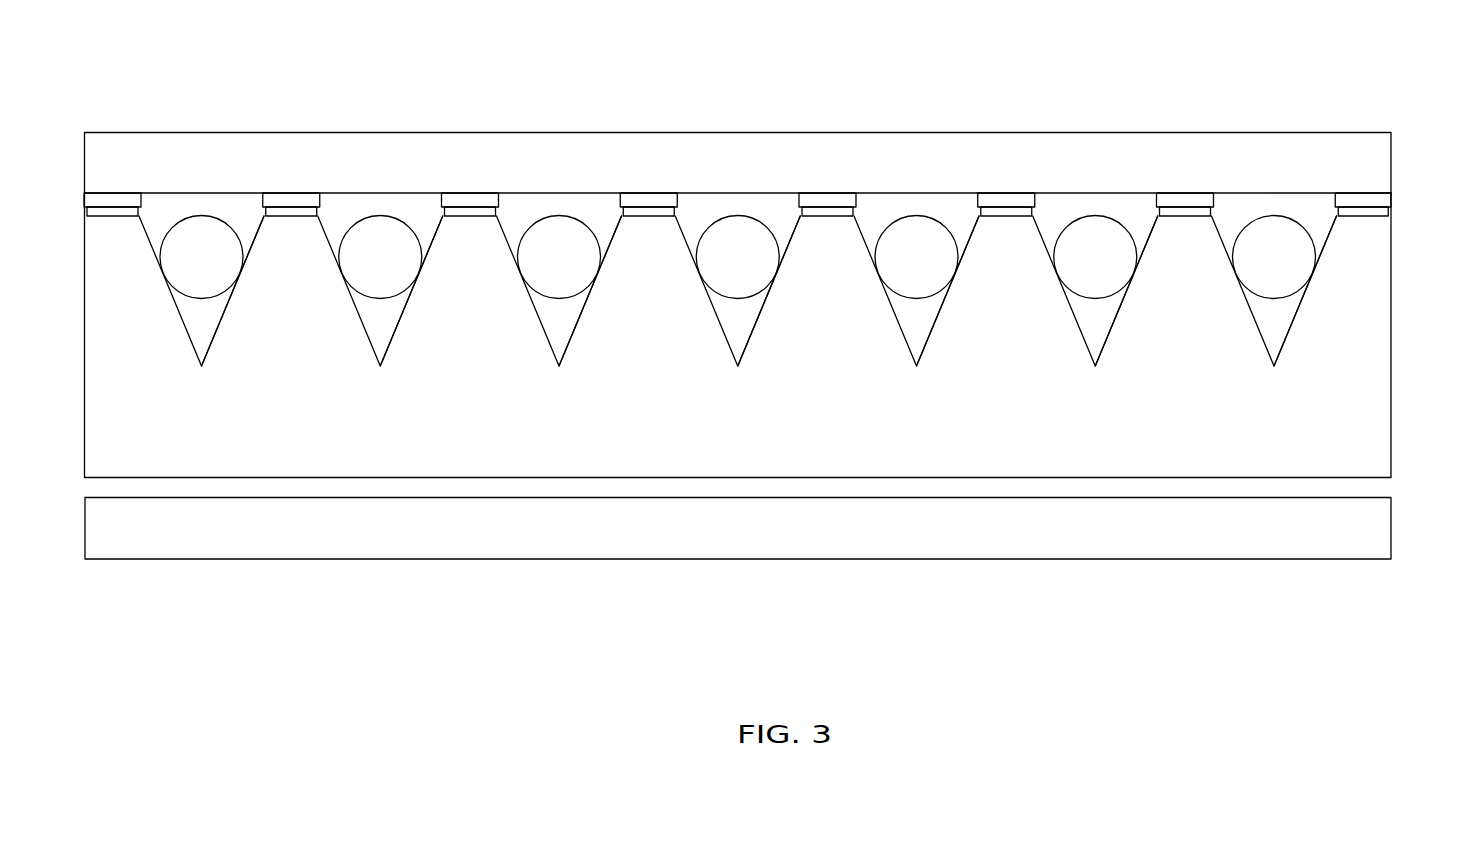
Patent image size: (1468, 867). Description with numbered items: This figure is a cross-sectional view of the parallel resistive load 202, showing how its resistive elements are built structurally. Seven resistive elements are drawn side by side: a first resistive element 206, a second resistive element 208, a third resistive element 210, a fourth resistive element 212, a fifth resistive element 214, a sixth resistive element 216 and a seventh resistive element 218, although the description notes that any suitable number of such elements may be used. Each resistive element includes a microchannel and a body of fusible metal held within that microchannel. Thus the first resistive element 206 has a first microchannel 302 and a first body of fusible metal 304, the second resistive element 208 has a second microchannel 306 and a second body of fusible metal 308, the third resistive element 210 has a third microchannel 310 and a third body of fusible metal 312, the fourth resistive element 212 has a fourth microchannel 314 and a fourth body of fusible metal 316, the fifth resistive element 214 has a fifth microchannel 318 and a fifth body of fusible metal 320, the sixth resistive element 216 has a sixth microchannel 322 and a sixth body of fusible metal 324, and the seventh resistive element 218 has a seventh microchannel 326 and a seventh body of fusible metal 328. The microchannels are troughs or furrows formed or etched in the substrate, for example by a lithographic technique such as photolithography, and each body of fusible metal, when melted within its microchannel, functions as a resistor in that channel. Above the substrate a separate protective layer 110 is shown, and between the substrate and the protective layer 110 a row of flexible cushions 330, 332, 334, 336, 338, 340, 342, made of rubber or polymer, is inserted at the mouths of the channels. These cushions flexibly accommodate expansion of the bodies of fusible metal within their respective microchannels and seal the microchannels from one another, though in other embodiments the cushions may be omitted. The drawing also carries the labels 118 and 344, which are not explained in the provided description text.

The parallel resistive load 202 is at (1000, 68).
The light guide layer 118 is at (406, 132).
The protective layer 110 is at (268, 560).
The flexible cushion 330 is at (128, 200).
The flexible cushion 332 is at (307, 200).
The flexible cushion 334 is at (486, 200).
The flexible cushion 336 is at (664, 200).
The flexible cushion 338 is at (843, 200).
The flexible cushion 340 is at (1022, 200).
The flexible cushion 342 is at (1200, 200).
The contact pad 344 is at (1379, 200).
The first resistive element 206 is at (199, 362).
The second resistive element 208 is at (378, 362).
The third resistive element 210 is at (556, 362).
The fourth resistive element 212 is at (735, 362).
The fifth resistive element 214 is at (914, 362).
The sixth resistive element 216 is at (1093, 362).
The seventh resistive element 218 is at (1272, 362).
The first microchannel 302 is at (217, 332).
The second microchannel 306 is at (396, 332).
The third microchannel 310 is at (574, 332).
The fourth microchannel 314 is at (753, 332).
The fifth microchannel 318 is at (932, 332).
The sixth microchannel 322 is at (1111, 332).
The seventh microchannel 326 is at (1282, 350).
The first body of fusible metal 304 is at (215, 273).
The second body of fusible metal 308 is at (394, 273).
The third body of fusible metal 312 is at (572, 273).
The fourth body of fusible metal 316 is at (751, 273).
The fifth body of fusible metal 320 is at (930, 273).
The sixth body of fusible metal 324 is at (1109, 273).
The seventh body of fusible metal 328 is at (1288, 273).